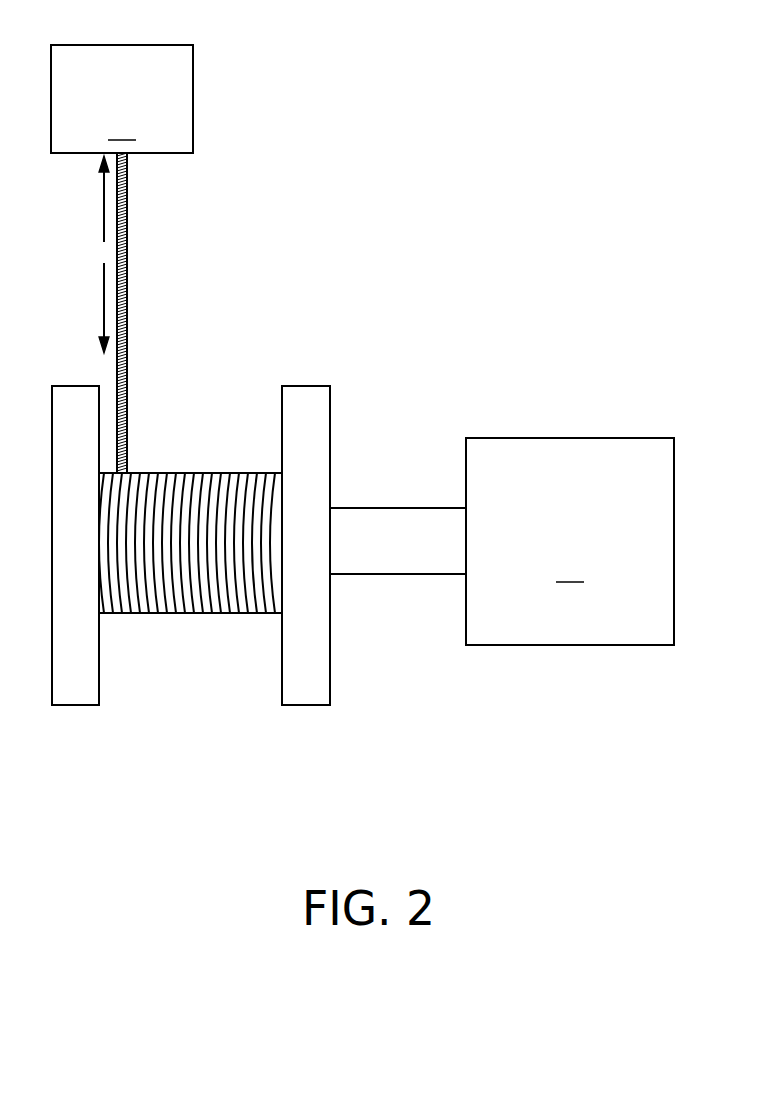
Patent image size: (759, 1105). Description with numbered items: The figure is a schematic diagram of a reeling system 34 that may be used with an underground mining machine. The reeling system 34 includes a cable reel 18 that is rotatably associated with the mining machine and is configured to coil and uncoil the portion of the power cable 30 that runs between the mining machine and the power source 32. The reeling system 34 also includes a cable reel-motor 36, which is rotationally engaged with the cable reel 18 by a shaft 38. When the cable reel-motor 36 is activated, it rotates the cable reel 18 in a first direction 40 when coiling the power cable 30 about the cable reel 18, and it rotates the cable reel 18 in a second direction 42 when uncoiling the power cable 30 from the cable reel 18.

The cable reel 18 is at (75, 705).
The power cable 30 is at (127, 247).
The power source 32 is at (122, 99).
The reeling system 34 is at (363, 457).
The cable reel-motor 36 is at (570, 541).
The shaft 38 is at (397, 574).
The first direction 40 is at (104, 307).
The second direction 42 is at (104, 197).